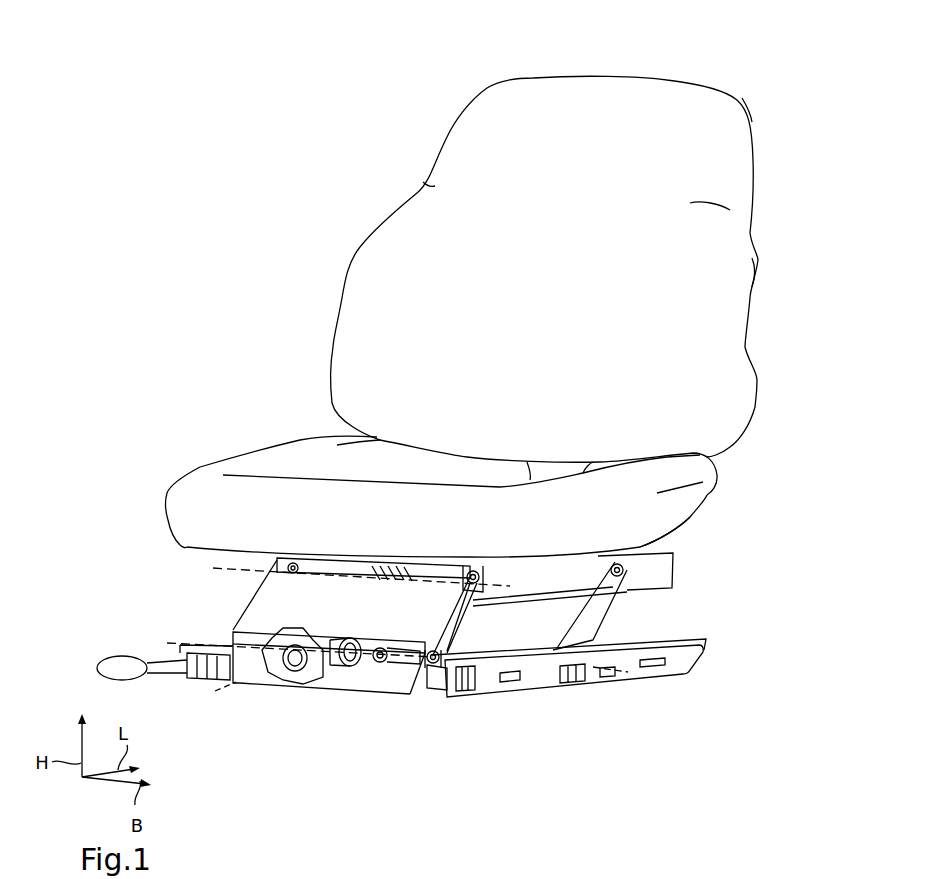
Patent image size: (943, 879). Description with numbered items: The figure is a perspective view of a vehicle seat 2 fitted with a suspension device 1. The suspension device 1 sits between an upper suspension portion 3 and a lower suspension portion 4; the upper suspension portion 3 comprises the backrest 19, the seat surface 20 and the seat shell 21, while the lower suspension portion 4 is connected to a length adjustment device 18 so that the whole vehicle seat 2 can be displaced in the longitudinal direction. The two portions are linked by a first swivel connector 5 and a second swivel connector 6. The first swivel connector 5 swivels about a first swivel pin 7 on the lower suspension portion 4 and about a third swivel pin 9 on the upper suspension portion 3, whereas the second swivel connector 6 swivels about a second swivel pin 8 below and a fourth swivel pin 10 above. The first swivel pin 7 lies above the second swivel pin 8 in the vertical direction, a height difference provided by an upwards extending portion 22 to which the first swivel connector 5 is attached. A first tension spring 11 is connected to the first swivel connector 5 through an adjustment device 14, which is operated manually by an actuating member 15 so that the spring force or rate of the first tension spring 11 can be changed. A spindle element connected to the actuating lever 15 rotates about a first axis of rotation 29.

The suspension device 1 is at (143, 603).
The vehicle seat 2 is at (791, 53).
The upper suspension portion 3 is at (665, 578).
The lower suspension portion 4 is at (442, 681).
The first swivel connector 5 is at (261, 611).
The second swivel connector 6 is at (597, 621).
The first swivel pin 7 is at (174, 643).
The second swivel pin 8 is at (625, 672).
The third swivel pin 9 is at (237, 567).
The fourth swivel pin 10 is at (640, 572).
The first tension spring 11 is at (473, 603).
The adjustment device 14 is at (344, 670).
The actuating member 15 is at (320, 678).
The length adjustment device 18 is at (678, 663).
The backrest 19 is at (461, 141).
The seat surface 20 is at (693, 492).
The seat shell 21 is at (684, 528).
The upwards extending portion 22 is at (433, 673).
The first axis of rotation 29 is at (233, 684).